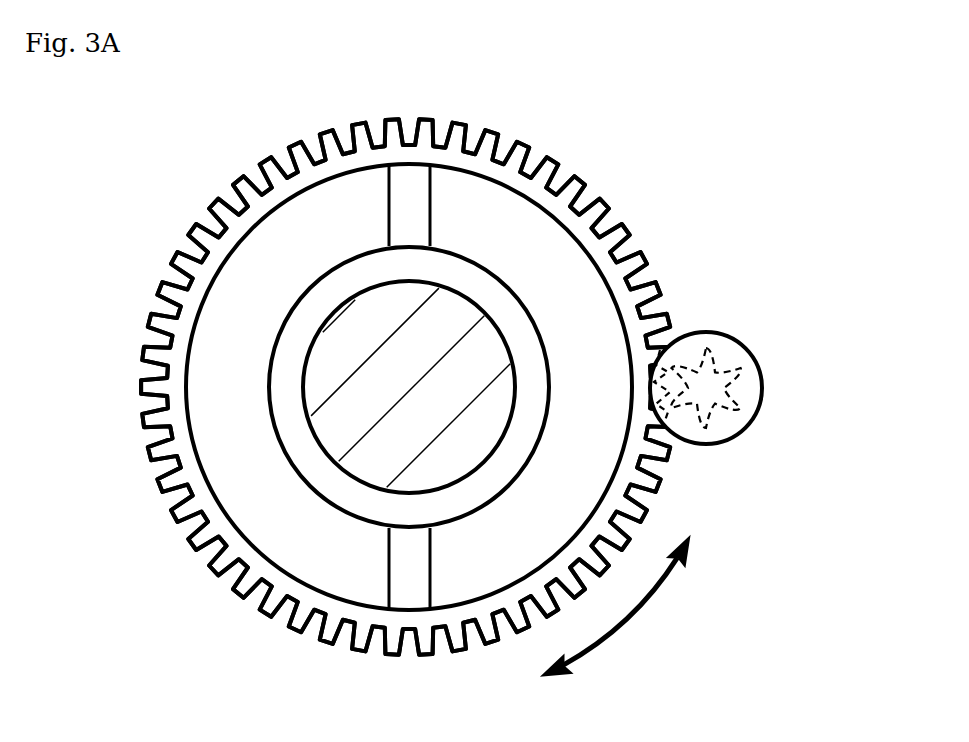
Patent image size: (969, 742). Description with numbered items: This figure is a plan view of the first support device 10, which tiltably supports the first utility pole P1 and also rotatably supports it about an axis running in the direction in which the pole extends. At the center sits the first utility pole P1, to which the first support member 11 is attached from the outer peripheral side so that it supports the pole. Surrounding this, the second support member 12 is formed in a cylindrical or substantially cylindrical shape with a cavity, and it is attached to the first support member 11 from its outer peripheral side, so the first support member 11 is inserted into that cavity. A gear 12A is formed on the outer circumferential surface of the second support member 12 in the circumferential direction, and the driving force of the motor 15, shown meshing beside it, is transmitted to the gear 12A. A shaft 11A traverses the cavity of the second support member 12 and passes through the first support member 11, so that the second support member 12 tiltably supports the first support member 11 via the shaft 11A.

The first support device 10 is at (472, 415).
The first support member 11 is at (264, 388).
The shaft 11A is at (400, 567).
The second support member 12 is at (409, 387).
The gear 12A is at (652, 500).
The motor 15 is at (764, 382).
The first utility pole P1 is at (483, 353).